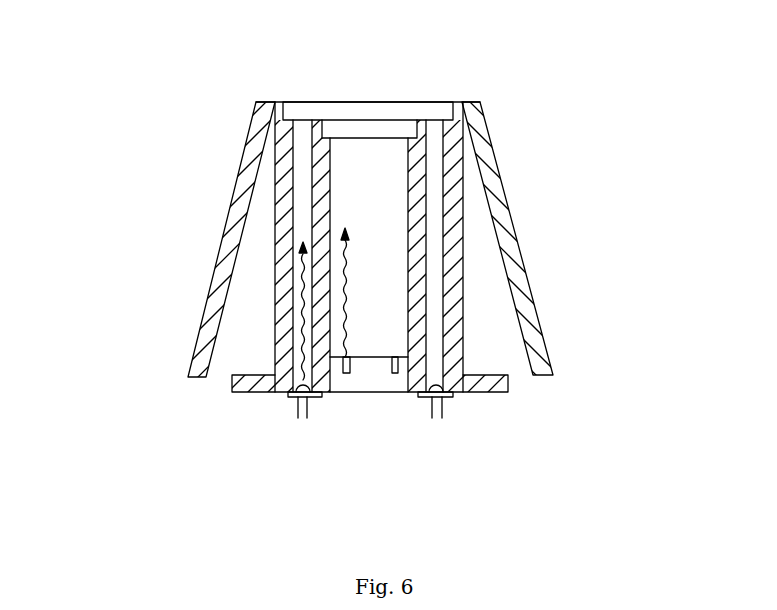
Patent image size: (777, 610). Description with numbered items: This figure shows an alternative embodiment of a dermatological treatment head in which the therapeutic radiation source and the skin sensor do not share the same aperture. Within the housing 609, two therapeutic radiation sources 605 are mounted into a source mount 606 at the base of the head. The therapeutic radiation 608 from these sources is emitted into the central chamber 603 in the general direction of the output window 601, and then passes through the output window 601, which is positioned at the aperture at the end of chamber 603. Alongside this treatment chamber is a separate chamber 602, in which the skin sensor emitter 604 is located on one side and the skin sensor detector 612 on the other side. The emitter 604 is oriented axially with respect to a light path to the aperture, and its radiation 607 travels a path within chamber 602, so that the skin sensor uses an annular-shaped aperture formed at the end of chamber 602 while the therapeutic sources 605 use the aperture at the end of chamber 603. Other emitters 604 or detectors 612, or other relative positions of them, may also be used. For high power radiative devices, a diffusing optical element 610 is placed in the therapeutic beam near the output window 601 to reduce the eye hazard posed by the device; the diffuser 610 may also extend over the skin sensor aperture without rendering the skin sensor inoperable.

The output window 601 is at (435, 110).
The chamber 602 is at (455, 190).
The chamber 603 is at (418, 270).
The skin sensor emitter 604 is at (290, 395).
The therapeutic radiation source 605 is at (388, 370).
The source mount 606 is at (338, 383).
The radiation 607 is at (318, 318).
The therapeutic radiation 608 is at (330, 248).
The housing 609 is at (250, 183).
The diffusing optical element 610 is at (340, 128).
The detector 612 is at (443, 397).